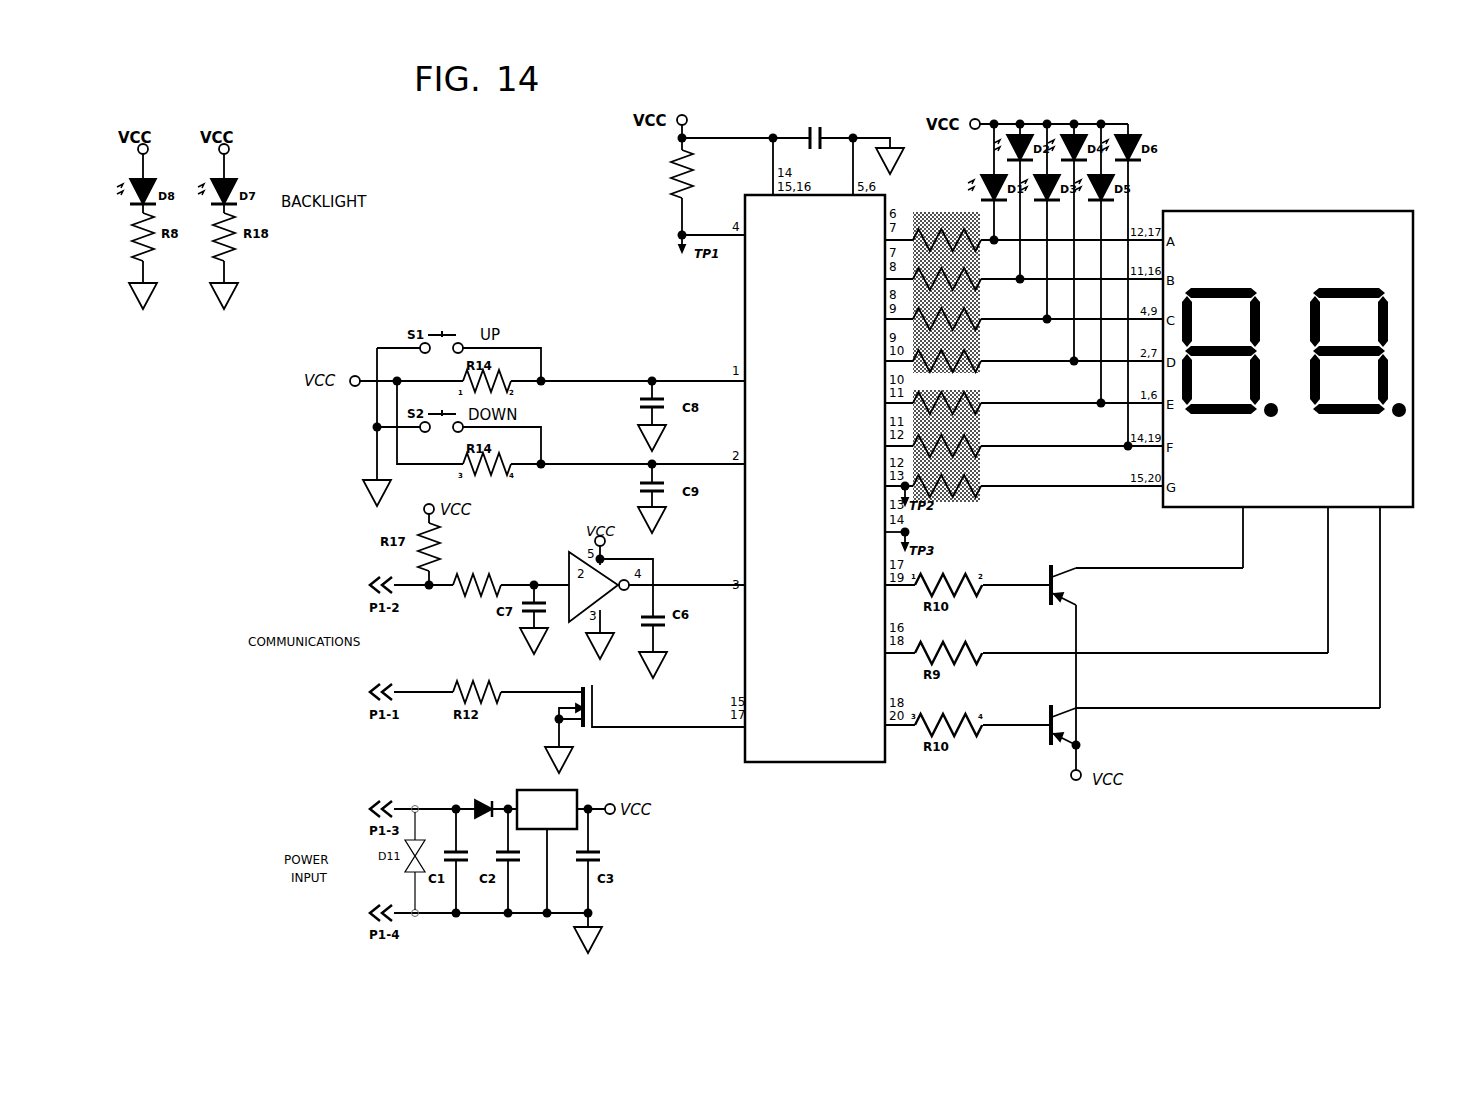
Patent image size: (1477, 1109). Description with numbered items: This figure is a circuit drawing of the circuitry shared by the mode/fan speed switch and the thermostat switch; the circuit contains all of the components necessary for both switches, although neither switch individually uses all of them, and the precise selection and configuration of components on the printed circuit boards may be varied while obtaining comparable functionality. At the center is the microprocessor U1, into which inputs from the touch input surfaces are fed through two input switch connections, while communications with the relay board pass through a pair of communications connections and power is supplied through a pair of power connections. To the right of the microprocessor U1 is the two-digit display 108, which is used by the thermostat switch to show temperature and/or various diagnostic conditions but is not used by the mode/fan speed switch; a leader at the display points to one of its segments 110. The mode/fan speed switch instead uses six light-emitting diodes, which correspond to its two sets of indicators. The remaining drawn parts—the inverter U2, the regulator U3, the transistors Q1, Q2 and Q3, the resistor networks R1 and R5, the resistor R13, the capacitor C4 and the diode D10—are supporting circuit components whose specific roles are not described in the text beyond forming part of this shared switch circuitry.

The display 108 is at (1268, 211).
The display segment 110 is at (1368, 287).
The microprocessor U1 is at (815, 492).
The inverter U2 is at (594, 600).
The voltage regulator U3 is at (547, 817).
The MOSFET transistor Q1 is at (650, 713).
The PNP transistor Q2 is at (1071, 725).
The PNP transistor Q3 is at (1071, 585).
The resistor network R1 is at (947, 286).
The resistor network R5 is at (947, 440).
The resistor R13 is at (697, 174).
The capacitor C4 is at (804, 128).
The diode D10 is at (485, 797).